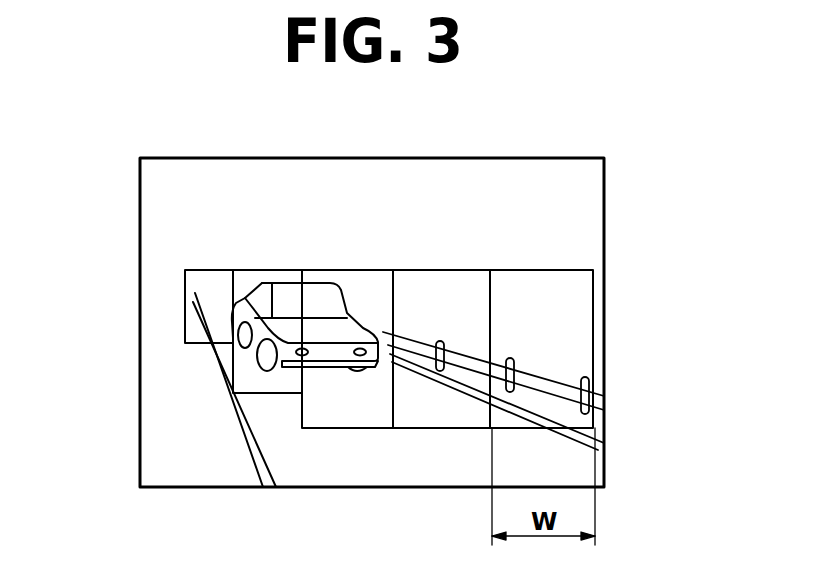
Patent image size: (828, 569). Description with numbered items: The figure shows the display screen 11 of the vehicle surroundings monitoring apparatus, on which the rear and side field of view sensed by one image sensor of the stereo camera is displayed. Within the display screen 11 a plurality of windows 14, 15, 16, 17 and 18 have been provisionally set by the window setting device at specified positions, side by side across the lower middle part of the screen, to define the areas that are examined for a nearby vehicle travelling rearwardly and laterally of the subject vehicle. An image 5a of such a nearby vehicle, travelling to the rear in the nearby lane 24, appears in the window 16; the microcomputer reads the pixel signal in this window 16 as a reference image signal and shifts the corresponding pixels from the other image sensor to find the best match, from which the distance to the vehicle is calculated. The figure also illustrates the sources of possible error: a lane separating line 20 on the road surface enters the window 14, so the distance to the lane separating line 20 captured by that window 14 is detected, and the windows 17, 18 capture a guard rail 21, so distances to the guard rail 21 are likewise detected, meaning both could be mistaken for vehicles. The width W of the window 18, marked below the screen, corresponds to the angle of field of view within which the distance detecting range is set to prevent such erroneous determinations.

The display screen 11 is at (604, 220).
The window 14 is at (210, 282).
The window 15 is at (267, 282).
The window 16 is at (362, 282).
The window 17 is at (447, 282).
The window 18 is at (547, 282).
The lane separating line 20 is at (223, 372).
The guard rail 21 is at (537, 372).
The nearby lane 24 is at (292, 452).
The image of nearby vehicle 5a is at (333, 363).